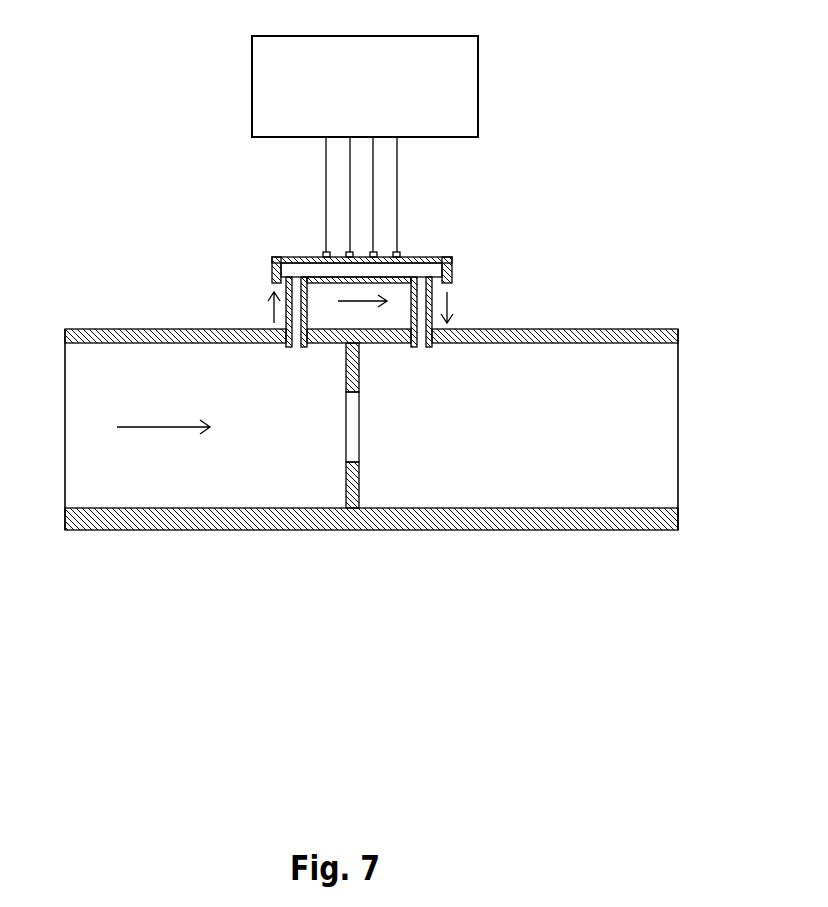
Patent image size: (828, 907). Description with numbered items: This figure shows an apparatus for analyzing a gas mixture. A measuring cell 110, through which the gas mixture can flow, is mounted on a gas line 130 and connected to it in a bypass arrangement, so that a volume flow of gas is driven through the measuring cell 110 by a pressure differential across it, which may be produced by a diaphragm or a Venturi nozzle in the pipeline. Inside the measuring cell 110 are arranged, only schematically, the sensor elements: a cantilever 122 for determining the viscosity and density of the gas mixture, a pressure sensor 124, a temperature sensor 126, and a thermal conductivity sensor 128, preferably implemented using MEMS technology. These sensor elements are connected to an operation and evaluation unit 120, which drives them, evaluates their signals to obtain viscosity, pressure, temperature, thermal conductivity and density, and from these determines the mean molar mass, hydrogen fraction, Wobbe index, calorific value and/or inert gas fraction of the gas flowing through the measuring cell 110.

The operation and evaluation unit 120 is at (268, 78).
The cantilever 122 is at (396, 253).
The pressure sensor 124 is at (372, 253).
The temperature sensor 126 is at (348, 253).
The thermal conductivity sensor 128 is at (324, 253).
The measuring cell 110 is at (285, 275).
The gas line 130 is at (97, 472).